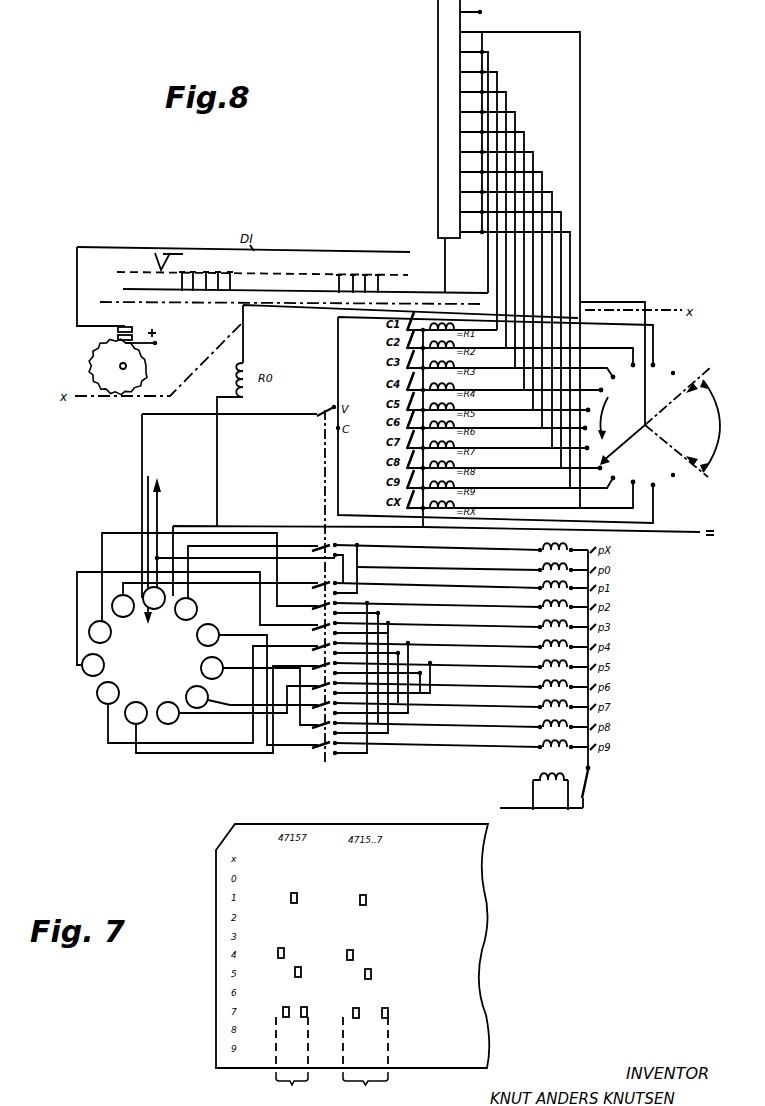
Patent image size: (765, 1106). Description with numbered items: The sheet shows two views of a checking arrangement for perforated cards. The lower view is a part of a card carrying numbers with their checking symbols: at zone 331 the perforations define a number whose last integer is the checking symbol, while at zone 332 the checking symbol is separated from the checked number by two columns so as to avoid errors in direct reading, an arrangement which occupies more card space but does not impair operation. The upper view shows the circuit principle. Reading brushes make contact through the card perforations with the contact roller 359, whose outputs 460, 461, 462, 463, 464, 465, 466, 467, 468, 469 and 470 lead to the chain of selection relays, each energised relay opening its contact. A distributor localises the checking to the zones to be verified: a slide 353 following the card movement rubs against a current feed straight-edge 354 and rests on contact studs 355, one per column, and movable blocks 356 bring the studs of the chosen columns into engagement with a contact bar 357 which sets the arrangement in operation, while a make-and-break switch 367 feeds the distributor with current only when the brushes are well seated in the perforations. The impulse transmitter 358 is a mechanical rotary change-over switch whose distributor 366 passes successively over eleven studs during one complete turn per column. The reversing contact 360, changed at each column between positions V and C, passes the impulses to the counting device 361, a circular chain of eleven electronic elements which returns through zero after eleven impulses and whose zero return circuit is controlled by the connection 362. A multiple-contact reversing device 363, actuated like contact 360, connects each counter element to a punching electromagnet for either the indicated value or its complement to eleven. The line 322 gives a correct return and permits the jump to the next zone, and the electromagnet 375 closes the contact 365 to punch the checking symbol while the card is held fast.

In FIG. 8, the contact roller 359 is at (438, 18).
In FIG. 8, the connection line from bx output 470 is at (557, 22).
In FIG. 8, the connection line from b0 output 460 is at (489, 52).
In FIG. 8, the connection line from b1 output 461 is at (498, 72).
In FIG. 8, the connection line from b2 output 462 is at (507, 92).
In FIG. 8, the connection line from b3 output 463 is at (516, 112).
In FIG. 8, the connection line from b4 output 464 is at (525, 132).
In FIG. 8, the connection line from b5 output 465 is at (534, 152).
In FIG. 8, the connection line from b6 output 466 is at (543, 172).
In FIG. 8, the connection line from b7 output 467 is at (560, 185).
In FIG. 8, the connection line from b8 output 468 is at (562, 212).
In FIG. 8, the connection line from b9 output 469 is at (571, 232).
In FIG. 8, the slide 353 is at (168, 254).
In FIG. 8, the current feed straight-edge 354 is at (310, 250).
In FIG. 8, the contact studs 355 is at (112, 273).
In FIG. 8, the movable blocks 356 is at (181, 291).
In FIG. 8, the contact bar 357 is at (240, 305).
In FIG. 8, the make-and-break switch 367 is at (147, 369).
In FIG. 8, the reversing contact 360 is at (328, 410).
In FIG. 8, the connection 362 is at (150, 476).
In FIG. 8, the line 322 is at (159, 502).
In FIG. 8, the counting device 361 is at (123, 668).
In FIG. 8, the reversing device having multiple contacts 363 is at (420, 662).
In FIG. 8, the electromagnet 375 is at (533, 781).
In FIG. 8, the contact 365 is at (596, 790).
In FIG. 8, the distributor 366 is at (625, 432).
In FIG. 8, the impulse transmitter 358 is at (648, 426).
In FIG. 7, the card zone with number and checking symbol 331 is at (292, 995).
In FIG. 7, the card zone with separated checking symbol 332 is at (365, 996).